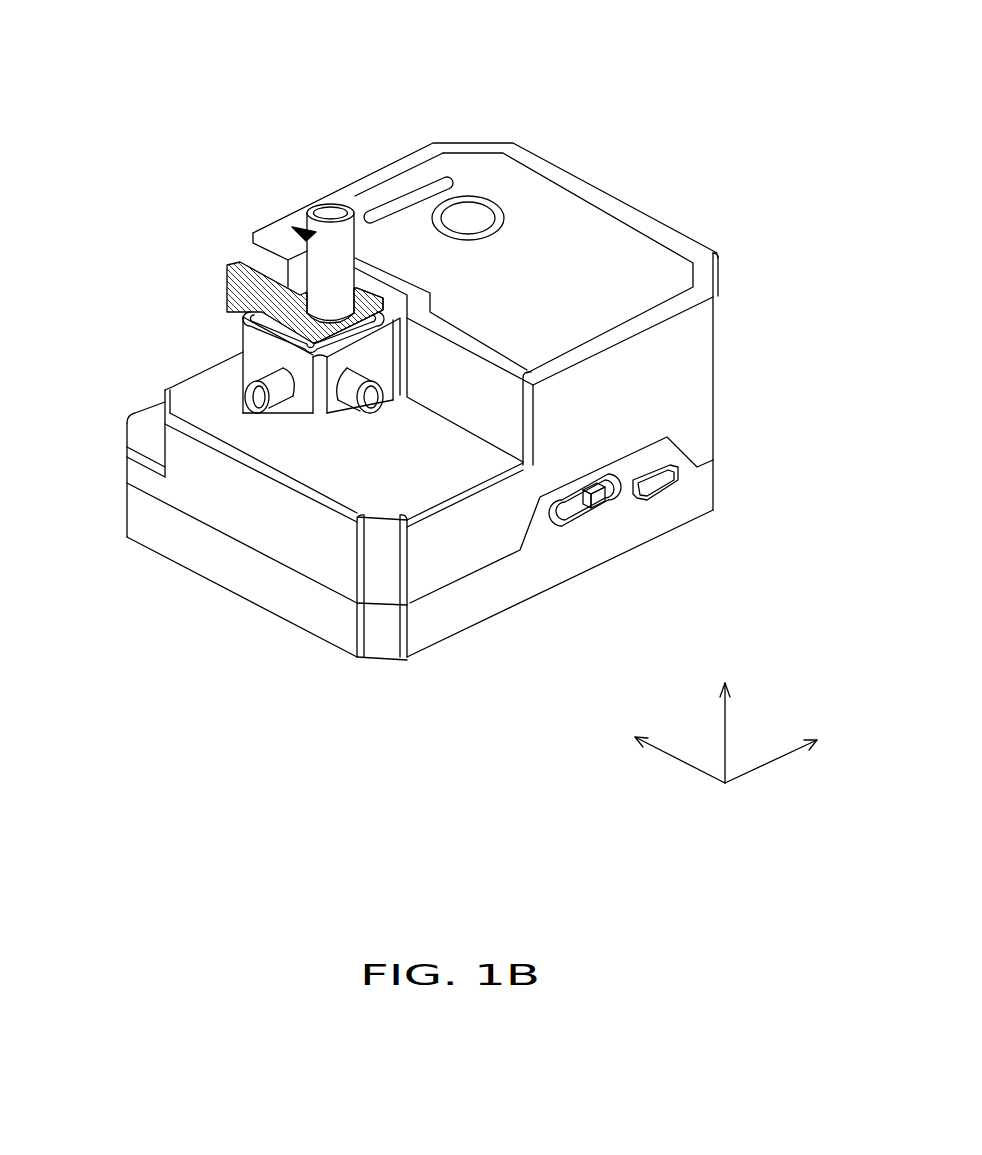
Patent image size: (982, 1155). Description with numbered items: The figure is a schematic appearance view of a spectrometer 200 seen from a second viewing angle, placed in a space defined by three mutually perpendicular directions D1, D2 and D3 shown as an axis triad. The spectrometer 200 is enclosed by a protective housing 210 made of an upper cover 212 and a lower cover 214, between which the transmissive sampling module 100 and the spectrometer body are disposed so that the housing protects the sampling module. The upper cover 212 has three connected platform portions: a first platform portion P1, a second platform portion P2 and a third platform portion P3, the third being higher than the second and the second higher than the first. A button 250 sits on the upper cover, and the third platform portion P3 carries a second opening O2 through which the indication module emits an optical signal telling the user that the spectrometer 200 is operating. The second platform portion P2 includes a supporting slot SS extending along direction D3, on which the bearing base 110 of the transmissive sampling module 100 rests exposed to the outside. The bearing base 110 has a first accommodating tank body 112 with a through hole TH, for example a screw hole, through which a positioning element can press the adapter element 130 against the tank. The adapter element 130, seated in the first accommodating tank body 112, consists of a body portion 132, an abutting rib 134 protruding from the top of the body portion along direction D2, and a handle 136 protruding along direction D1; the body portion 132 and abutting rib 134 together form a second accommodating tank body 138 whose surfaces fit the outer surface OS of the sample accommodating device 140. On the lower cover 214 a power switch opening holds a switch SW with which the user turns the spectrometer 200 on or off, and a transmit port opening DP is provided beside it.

The transmissive sampling module 100 is at (249, 381).
The bearing base 110 is at (236, 472).
The first accommodating tank body 112 is at (273, 335).
The adapter element 130 is at (127, 773).
The body portion 132 is at (337, 333).
The abutting rib 134 is at (362, 173).
The handle 136 is at (242, 262).
The second accommodating tank body 138 is at (372, 280).
The sample accommodating device 140 is at (333, 202).
The spectrometer 200 is at (480, 483).
The protective housing 210 is at (480, 383).
The upper cover 212 is at (695, 372).
The lower cover 214 is at (697, 497).
The button 250 is at (447, 160).
The second opening O2 is at (470, 212).
The outer surface OS is at (297, 227).
The first platform portion P1 is at (147, 430).
The second platform portion P2 is at (325, 475).
The third platform portion P3 is at (567, 223).
The through hole TH is at (255, 402).
The supporting slot SS is at (263, 411).
The switch SW is at (567, 503).
The transmit port opening DP is at (653, 487).
The direction D1 is at (662, 751).
The direction D2 is at (786, 751).
The direction D3 is at (722, 716).